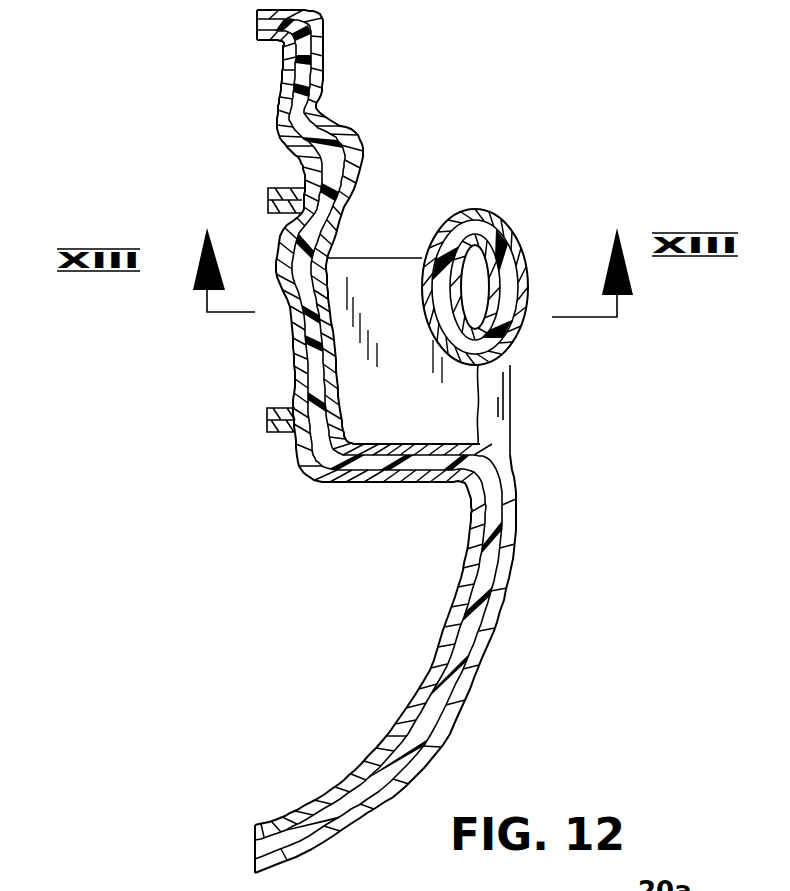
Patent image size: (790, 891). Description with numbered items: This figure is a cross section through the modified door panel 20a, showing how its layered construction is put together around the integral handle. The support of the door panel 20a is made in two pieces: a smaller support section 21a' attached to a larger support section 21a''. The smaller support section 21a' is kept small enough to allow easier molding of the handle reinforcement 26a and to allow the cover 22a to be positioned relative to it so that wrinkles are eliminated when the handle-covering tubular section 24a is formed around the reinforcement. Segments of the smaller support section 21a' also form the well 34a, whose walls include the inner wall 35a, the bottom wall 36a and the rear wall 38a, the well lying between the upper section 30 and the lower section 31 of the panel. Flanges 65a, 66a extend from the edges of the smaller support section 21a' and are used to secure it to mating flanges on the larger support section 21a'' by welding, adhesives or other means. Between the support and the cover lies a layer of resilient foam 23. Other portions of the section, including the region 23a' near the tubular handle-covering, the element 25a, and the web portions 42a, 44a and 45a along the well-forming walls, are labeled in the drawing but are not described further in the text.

The door panel 20a is at (487, 95).
The smaller support section 21a' is at (185, 372).
The larger support section 21a'' is at (249, 516).
The cover 22a is at (357, 133).
The resilient foam 23 is at (448, 657).
The bulb wall portion 23a' is at (569, 221).
The handle-covering tubular section 24a is at (506, 220).
The bulb outer layer 25a is at (450, 210).
The handle reinforcement 26a is at (488, 207).
The upper section 30 is at (323, 53).
The lower section 31 is at (466, 707).
The well 34a is at (377, 273).
The wall 35a is at (347, 395).
The wall 36a is at (490, 440).
The wall 38a is at (427, 318).
The neck portion 42a is at (513, 372).
The corner portion 44a is at (490, 438).
The connecting web 45a is at (505, 390).
The flange 65a is at (268, 217).
The flange 66a is at (267, 408).